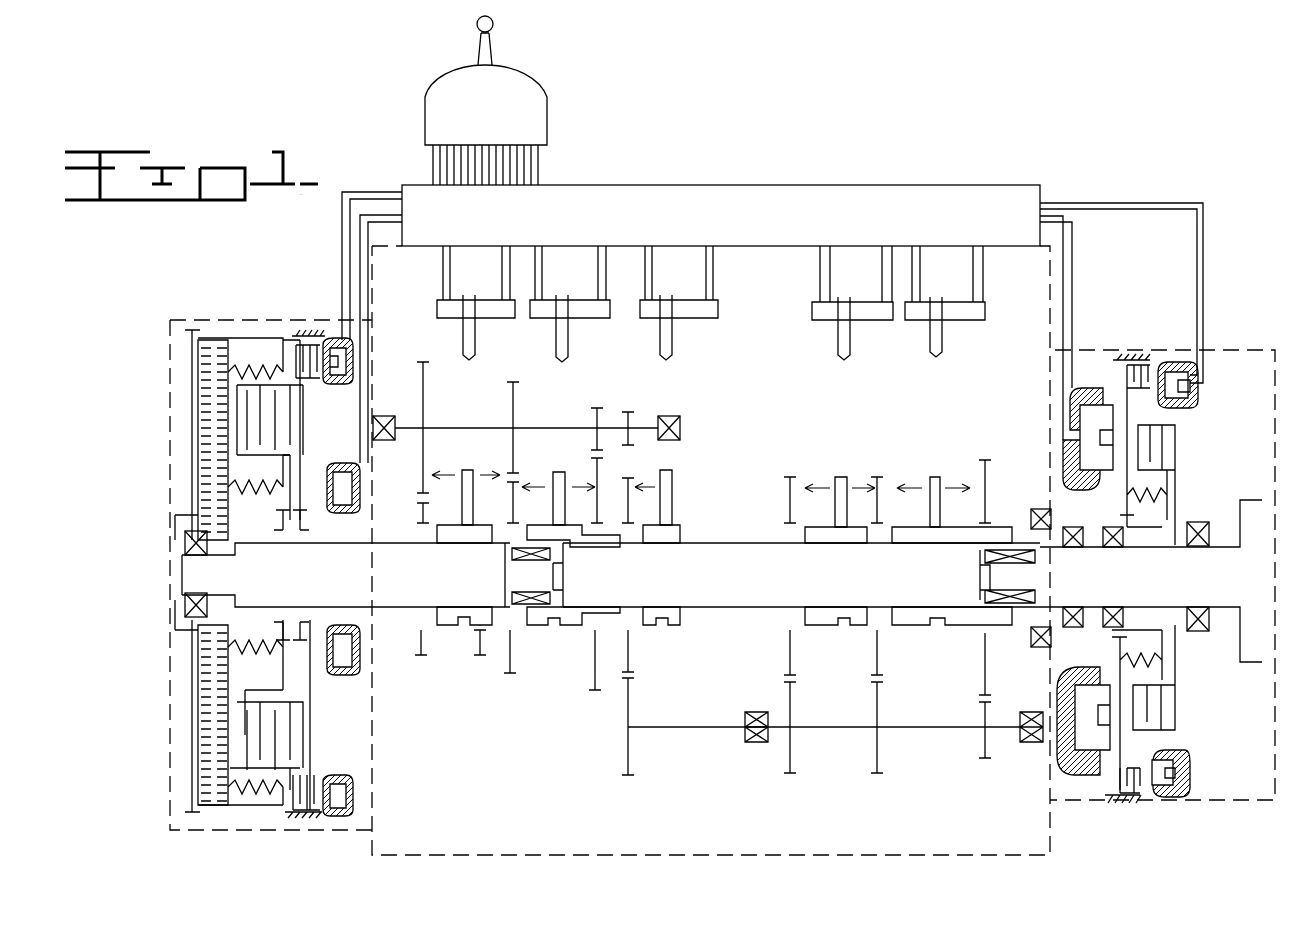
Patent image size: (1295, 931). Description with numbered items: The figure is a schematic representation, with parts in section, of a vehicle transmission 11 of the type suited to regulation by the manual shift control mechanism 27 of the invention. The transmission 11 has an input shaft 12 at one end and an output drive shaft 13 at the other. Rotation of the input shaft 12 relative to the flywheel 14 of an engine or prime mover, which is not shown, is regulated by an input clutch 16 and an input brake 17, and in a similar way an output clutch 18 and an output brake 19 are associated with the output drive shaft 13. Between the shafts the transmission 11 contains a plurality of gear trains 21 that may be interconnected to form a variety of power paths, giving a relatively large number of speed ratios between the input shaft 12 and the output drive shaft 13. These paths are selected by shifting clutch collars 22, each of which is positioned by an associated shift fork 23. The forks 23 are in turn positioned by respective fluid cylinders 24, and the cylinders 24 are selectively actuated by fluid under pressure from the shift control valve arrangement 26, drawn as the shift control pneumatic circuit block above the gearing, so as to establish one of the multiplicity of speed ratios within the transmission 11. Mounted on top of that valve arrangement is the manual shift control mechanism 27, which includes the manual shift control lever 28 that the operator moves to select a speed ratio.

The transmission 11 is at (922, 183).
The input shaft 12 is at (298, 588).
The output drive shaft 13 is at (1231, 589).
The flywheel 14 is at (205, 440).
The input clutch 16 is at (308, 742).
The input brake 17 is at (290, 802).
The output clutch 18 is at (1182, 700).
The output brake 19 is at (1127, 800).
The gear trains 21 is at (510, 383).
The clutch collars 22 is at (475, 545).
The shift fork 23 is at (466, 472).
The fluid cylinders 24 is at (440, 312).
The shift control valve arrangement 26 is at (921, 234).
The manual shift control mechanism 27 is at (551, 95).
The manual shift control lever 28 is at (494, 36).